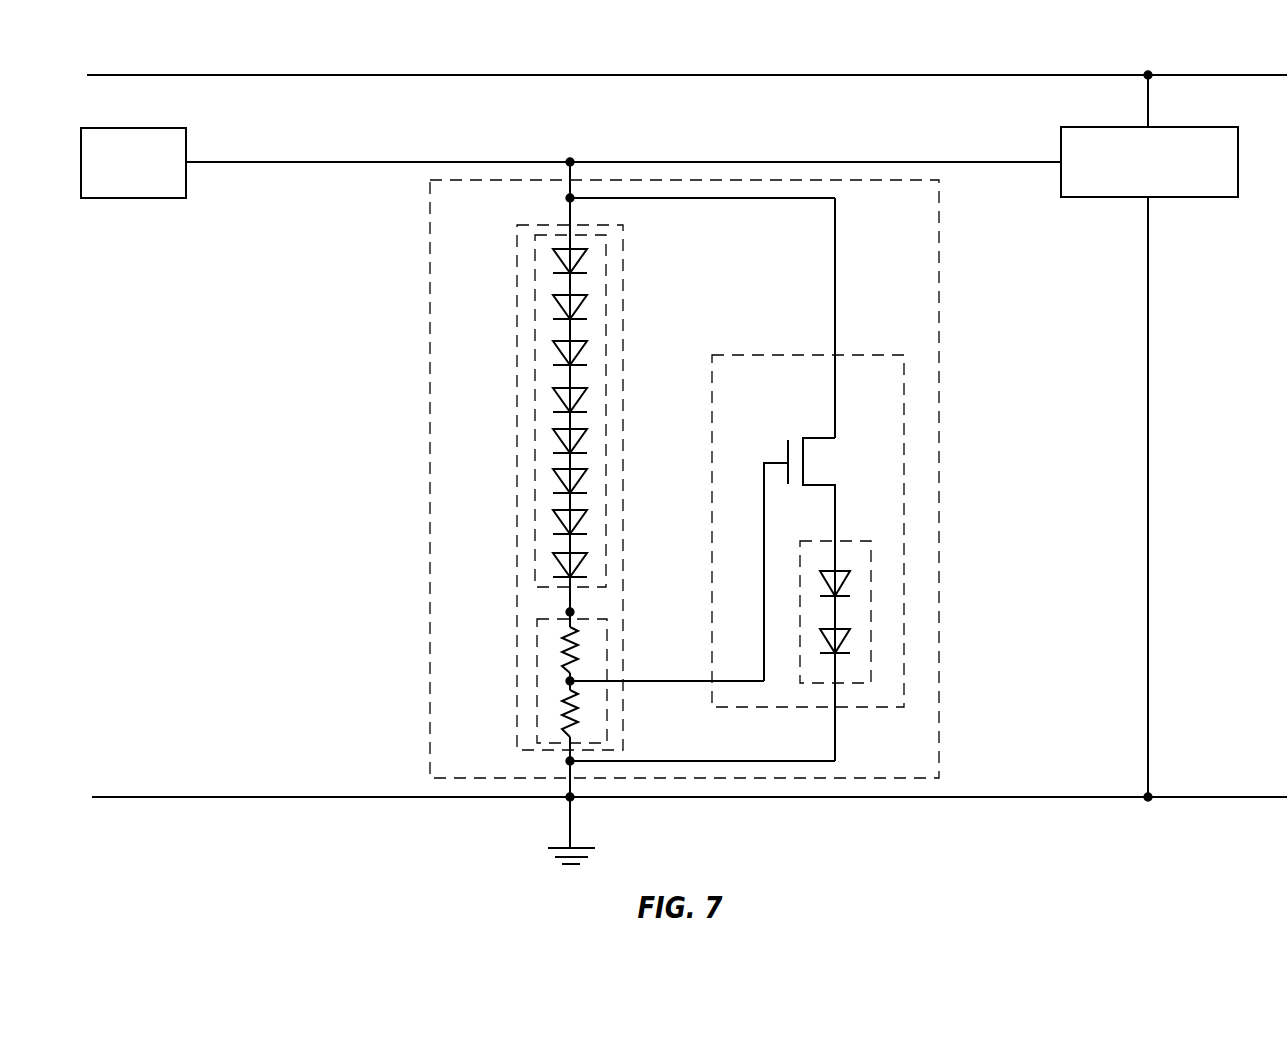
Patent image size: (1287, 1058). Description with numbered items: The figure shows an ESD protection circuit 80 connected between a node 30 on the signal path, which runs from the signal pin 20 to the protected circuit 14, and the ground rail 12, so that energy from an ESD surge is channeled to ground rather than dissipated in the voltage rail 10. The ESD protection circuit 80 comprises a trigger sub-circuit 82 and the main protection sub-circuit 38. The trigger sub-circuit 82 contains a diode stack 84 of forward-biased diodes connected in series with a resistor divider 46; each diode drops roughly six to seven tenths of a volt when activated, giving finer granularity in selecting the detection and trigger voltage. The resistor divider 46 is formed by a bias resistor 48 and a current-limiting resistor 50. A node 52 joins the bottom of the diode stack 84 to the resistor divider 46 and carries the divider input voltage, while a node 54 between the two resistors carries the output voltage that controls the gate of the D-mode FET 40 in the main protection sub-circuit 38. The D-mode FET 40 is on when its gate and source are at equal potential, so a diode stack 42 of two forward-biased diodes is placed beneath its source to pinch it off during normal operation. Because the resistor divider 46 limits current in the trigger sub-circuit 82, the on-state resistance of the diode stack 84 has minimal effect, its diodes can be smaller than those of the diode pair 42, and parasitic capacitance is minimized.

The voltage rail 10 is at (216, 75).
The ground rail 12 is at (205, 797).
The protected circuit 14 is at (1200, 127).
The signal pin 20 is at (167, 128).
The node 30 is at (582, 152).
The main protection sub-circuit 38 is at (853, 355).
The D-mode FET 40 is at (820, 458).
The diode stack 42 is at (870, 578).
The resistor divider 46 is at (603, 618).
The bias resistor 48 is at (580, 645).
The current-limiting resistor 50 is at (580, 720).
The node 52 is at (560, 609).
The node 54 is at (560, 680).
The ESD protection circuit 80 is at (430, 345).
The trigger sub-circuit 82 is at (517, 362).
The diode stack 84 is at (606, 313).